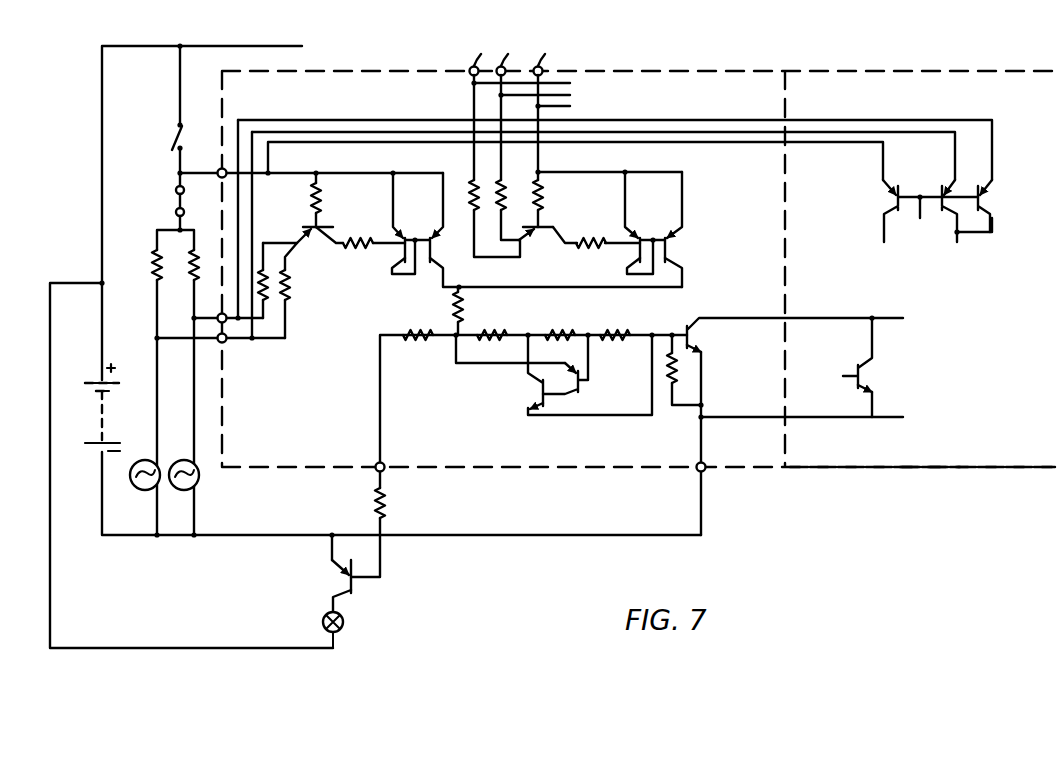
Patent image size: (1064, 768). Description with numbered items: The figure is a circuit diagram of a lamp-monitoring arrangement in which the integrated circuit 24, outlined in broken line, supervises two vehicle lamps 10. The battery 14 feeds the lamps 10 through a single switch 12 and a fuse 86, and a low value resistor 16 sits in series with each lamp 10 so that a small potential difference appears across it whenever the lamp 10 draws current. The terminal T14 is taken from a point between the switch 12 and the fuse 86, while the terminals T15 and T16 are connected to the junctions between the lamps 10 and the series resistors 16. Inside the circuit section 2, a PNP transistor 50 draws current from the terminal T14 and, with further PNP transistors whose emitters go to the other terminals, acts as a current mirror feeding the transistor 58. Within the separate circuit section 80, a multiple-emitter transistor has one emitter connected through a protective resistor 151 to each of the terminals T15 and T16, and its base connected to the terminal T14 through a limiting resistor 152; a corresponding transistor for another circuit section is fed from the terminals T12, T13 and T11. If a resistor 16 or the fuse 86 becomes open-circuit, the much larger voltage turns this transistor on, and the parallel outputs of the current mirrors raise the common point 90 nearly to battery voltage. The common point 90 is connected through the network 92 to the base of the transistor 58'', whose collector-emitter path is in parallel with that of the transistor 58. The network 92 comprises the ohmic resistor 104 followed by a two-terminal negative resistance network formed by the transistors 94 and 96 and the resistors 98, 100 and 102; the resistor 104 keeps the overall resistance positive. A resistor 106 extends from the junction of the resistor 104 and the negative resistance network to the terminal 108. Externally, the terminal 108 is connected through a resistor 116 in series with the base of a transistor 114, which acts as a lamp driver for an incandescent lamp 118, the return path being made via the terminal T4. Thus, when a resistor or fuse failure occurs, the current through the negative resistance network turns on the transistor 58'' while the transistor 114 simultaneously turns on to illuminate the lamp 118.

The switch 12 is at (172, 133).
The terminal T14 is at (219, 168).
The fuse 86 is at (175, 197).
The low value resistor 16 is at (160, 268).
The battery 14 is at (99, 370).
The terminal T15 is at (226, 322).
The terminal T16 is at (218, 342).
The lamp 10 is at (152, 489).
The limiting resistor 152 is at (321, 197).
The protective resistor 151 is at (289, 285).
The common point 90 is at (462, 289).
The ohmic resistor 104 is at (454, 309).
The terminal T12 is at (512, 144).
The terminal T13 is at (533, 135).
The terminal T11 is at (607, 129).
The resistor 106 is at (418, 342).
The resistor 98 is at (493, 330).
The resistor 100 is at (559, 330).
The resistor 102 is at (616, 330).
The network 92 is at (536, 382).
The transistor 96 is at (526, 393).
The transistor 94 is at (585, 384).
The transistor 58'' is at (785, 425).
The transistor 58 is at (878, 367).
The circuit section 80 is at (561, 459).
The circuit section 2 is at (925, 463).
The integrated circuit 24 is at (887, 472).
The terminal T4 is at (705, 471).
The terminal 108 is at (384, 470).
The resistor 116 is at (372, 496).
The transistor 114 is at (355, 586).
The incandescent lamp 118 is at (344, 622).
The PNP transistor 50 is at (889, 201).